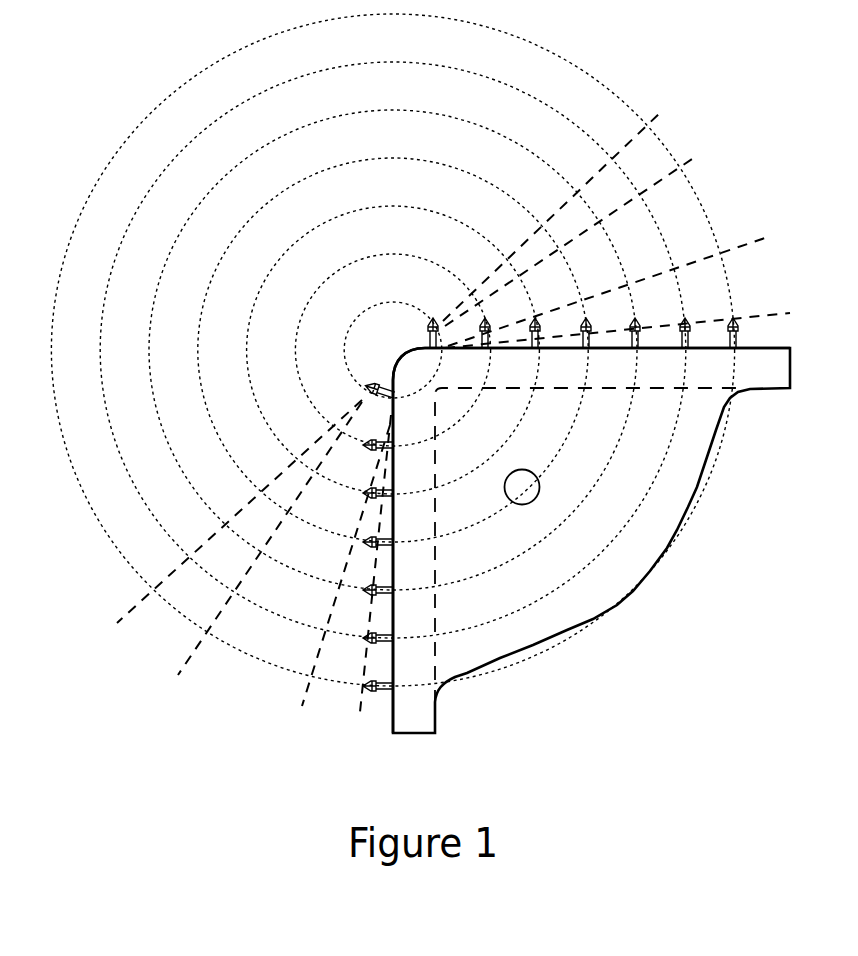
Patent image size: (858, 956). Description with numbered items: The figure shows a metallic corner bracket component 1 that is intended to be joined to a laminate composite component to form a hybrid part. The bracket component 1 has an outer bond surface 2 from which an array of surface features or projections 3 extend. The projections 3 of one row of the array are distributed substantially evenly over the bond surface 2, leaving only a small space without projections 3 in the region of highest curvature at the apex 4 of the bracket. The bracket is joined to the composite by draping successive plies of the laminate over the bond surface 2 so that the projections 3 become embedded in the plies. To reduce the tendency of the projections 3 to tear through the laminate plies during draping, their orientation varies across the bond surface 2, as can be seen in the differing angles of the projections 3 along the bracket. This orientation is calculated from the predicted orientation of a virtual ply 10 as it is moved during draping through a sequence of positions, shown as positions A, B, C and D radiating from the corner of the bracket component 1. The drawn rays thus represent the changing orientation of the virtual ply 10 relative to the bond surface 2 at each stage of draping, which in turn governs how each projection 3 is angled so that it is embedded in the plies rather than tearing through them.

The corner bracket component 1 is at (552, 630).
The outer bond surface 2 is at (768, 349).
The projections 3 is at (433, 319).
The apex 4 is at (397, 350).
The virtual ply 10 is at (301, 702).
The ply position A is at (662, 104).
The ply position B is at (695, 158).
The ply position C is at (766, 240).
The ply position D is at (774, 316).